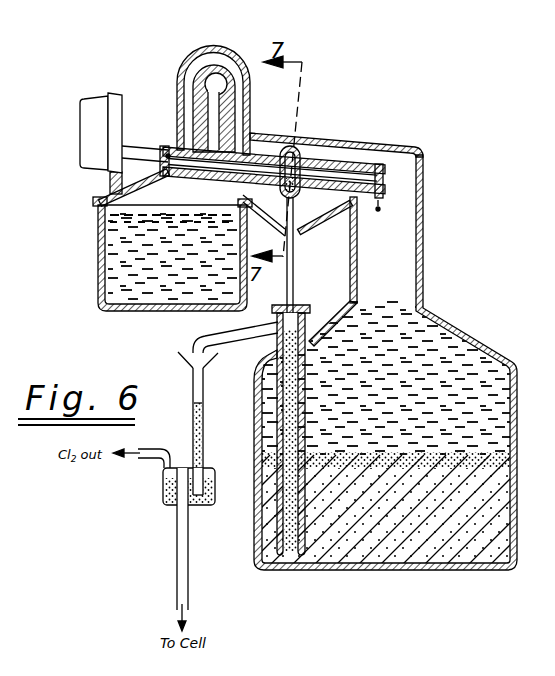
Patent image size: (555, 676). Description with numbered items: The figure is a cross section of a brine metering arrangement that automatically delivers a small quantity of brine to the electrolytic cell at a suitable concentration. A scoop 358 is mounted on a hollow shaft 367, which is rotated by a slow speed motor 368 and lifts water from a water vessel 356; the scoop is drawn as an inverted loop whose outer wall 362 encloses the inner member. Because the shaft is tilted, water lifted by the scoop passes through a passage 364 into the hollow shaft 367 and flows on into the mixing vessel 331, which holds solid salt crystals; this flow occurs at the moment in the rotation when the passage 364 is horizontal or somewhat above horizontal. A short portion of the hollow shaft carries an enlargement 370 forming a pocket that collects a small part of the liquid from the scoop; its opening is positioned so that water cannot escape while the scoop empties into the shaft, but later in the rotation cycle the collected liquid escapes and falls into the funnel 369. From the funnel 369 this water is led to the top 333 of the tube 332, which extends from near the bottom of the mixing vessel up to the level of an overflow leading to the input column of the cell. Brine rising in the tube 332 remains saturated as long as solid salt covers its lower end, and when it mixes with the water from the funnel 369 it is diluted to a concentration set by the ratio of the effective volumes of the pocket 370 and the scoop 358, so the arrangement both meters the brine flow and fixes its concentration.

The mixing vessel 331 is at (472, 341).
The tube 332 is at (277, 411).
The top of tube 333 is at (312, 318).
The water vessel 356 is at (97, 253).
The scoop 358 is at (195, 98).
The inverted U-shaped tube 362 is at (224, 76).
The passage 364 is at (210, 127).
The hollow shaft 367 is at (347, 163).
The slow speed motor 368 is at (92, 141).
The funnel 369 is at (313, 225).
The enlargement 370 is at (294, 198).